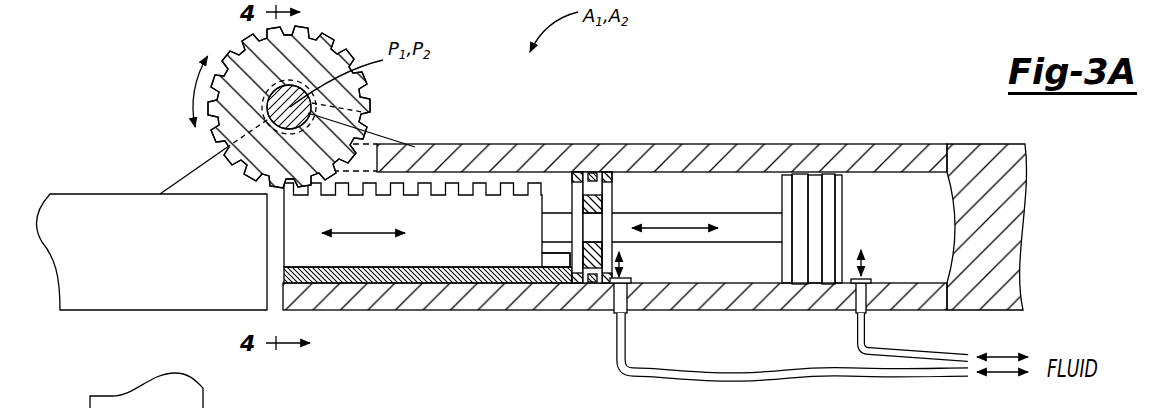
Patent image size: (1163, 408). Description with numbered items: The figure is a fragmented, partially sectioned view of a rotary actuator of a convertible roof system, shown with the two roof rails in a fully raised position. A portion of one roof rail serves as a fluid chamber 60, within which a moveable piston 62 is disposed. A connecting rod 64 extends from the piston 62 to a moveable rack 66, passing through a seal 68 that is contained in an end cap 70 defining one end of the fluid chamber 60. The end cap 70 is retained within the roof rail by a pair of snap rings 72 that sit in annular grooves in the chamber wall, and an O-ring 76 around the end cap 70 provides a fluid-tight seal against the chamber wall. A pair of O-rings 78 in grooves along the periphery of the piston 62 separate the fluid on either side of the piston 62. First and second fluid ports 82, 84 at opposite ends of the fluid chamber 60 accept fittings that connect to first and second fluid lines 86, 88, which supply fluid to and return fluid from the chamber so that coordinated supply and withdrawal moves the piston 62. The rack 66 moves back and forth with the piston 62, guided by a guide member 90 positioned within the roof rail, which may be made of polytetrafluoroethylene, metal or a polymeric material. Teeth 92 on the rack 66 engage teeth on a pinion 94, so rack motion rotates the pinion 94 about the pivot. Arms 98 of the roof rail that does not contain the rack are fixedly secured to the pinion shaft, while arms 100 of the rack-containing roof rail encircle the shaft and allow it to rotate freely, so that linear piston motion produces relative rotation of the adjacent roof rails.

The fluid chamber 60 is at (730, 190).
The piston 62 is at (808, 178).
The connecting rod 64 is at (724, 244).
The rack 66 is at (524, 243).
The seal 68 is at (610, 210).
The end cap 70 is at (572, 197).
The snap rings 72 is at (577, 176).
The O-ring 76 is at (592, 175).
The O-rings 78 is at (796, 178).
The first fluid port 82 is at (857, 305).
The second fluid port 84 is at (614, 300).
The first fluid line 86 is at (895, 350).
The second fluid line 88 is at (632, 377).
The guide member 90 is at (406, 284).
The teeth 92 is at (478, 190).
The pinion 94 is at (336, 40).
The arms 98 is at (192, 170).
The arms 100 is at (400, 128).